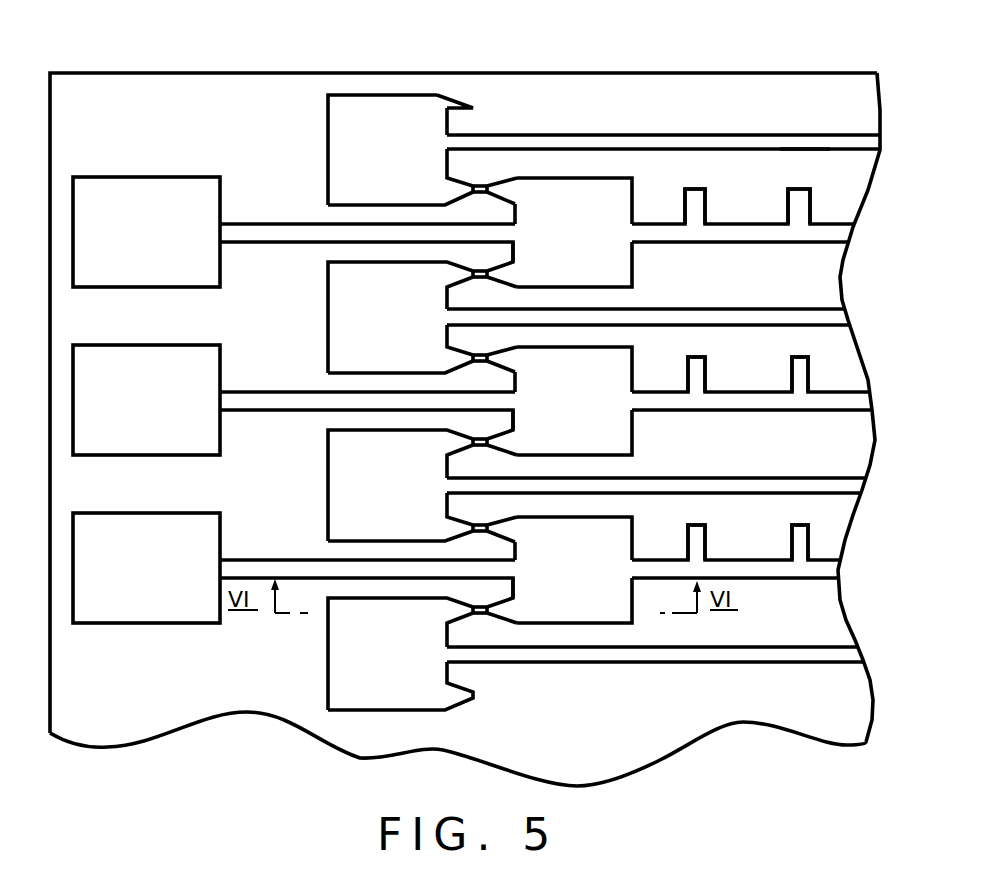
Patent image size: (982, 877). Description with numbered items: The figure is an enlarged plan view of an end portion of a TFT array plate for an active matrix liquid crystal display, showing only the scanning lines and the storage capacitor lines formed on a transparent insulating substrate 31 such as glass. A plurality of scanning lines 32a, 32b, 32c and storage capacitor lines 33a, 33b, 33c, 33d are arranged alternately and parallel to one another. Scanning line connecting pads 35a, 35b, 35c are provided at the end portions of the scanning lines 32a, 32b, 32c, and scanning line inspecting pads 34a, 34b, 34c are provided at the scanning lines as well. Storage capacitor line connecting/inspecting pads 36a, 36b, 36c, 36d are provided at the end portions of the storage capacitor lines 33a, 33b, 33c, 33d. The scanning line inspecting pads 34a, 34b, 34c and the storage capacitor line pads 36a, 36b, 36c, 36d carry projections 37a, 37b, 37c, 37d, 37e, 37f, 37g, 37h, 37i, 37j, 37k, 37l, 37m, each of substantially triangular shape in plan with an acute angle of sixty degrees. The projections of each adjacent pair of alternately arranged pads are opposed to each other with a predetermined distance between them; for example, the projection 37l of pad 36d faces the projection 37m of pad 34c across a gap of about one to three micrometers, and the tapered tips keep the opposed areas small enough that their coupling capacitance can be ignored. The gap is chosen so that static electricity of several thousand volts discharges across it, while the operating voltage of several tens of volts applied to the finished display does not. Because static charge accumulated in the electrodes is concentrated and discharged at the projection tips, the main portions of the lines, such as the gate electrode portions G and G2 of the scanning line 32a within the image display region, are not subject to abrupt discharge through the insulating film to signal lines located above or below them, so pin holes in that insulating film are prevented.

The transparent insulating substrate 31 is at (513, 73).
The scanning line connecting pad 35a is at (152, 185).
The scanning line connecting pad 35b is at (152, 355).
The scanning line connecting pad 35c is at (152, 525).
The storage capacitor line connecting/inspecting pad 36a is at (328, 128).
The storage capacitor line connecting/inspecting pad 36b is at (328, 296).
The storage capacitor line connecting/inspecting pad 36c is at (328, 480).
The storage capacitor line connecting/inspecting pad 36d is at (328, 662).
The projection 37a is at (467, 100).
The projection 37b is at (457, 178).
The projection 37c is at (520, 188).
The projection 37d is at (458, 270).
The projection 37e is at (502, 272).
The projection 37f is at (458, 366).
The projection 37g is at (500, 356).
The projection 37h is at (457, 437).
The projection 37i is at (492, 448).
The projection 37j is at (462, 527).
The bridge portion 37k is at (500, 527).
The projection 37l is at (455, 612).
The projection 37m is at (506, 613).
The storage capacitor line 33a is at (748, 135).
The storage capacitor line 33b is at (748, 309).
The storage capacitor line 33c is at (656, 458).
The storage capacitor line 33d is at (792, 647).
The scanning line inspecting pad 34a is at (604, 198).
The scanning line inspecting pad 34b is at (622, 392).
The scanning line inspecting pad 34c is at (622, 560).
The scanning line 32a is at (748, 223).
The scanning line 32b is at (750, 393).
The scanning line 32c is at (746, 562).
The gate electrode G is at (690, 203).
The gap G2 is at (806, 135).